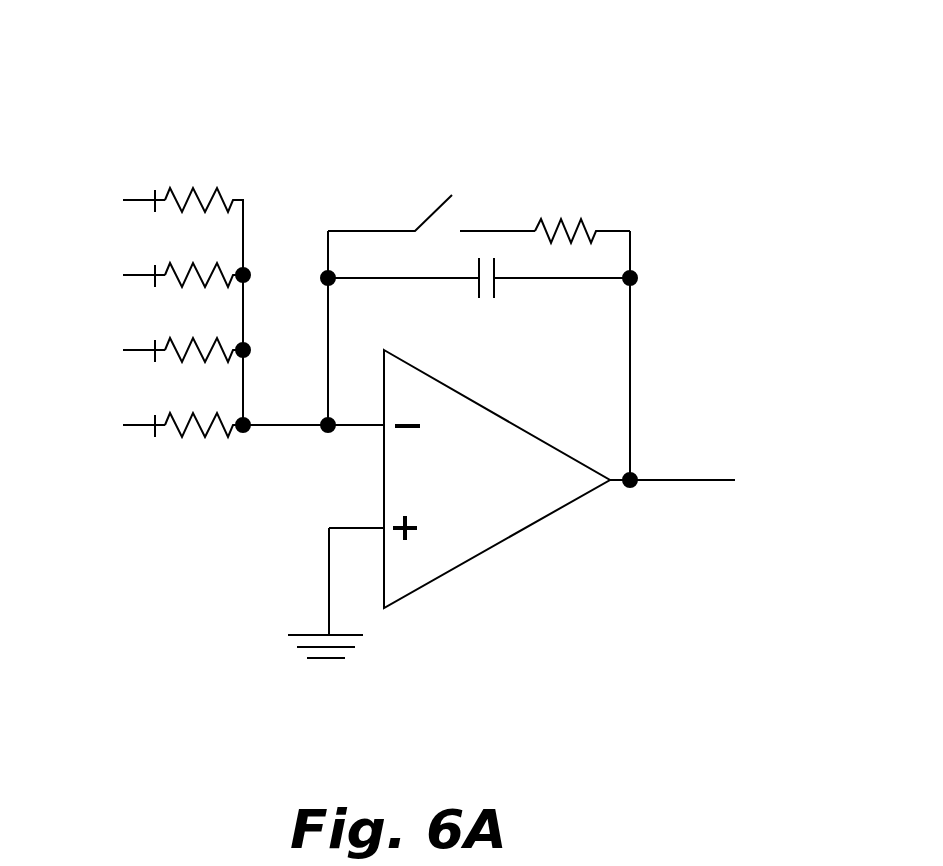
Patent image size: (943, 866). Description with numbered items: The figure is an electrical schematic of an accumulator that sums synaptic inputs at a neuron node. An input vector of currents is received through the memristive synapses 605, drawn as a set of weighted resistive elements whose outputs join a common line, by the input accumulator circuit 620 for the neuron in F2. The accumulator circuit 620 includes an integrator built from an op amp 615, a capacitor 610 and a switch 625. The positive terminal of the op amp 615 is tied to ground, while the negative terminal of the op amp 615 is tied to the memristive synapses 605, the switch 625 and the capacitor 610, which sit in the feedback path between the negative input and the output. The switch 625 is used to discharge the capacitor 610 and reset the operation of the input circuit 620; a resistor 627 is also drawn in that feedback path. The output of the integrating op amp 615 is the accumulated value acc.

The memristive synapses 605 is at (253, 128).
The input accumulator circuit 620 is at (637, 127).
The switch 625 is at (443, 201).
The resistor 627 is at (583, 222).
The capacitor 610 is at (485, 303).
The op amp 615 is at (497, 479).